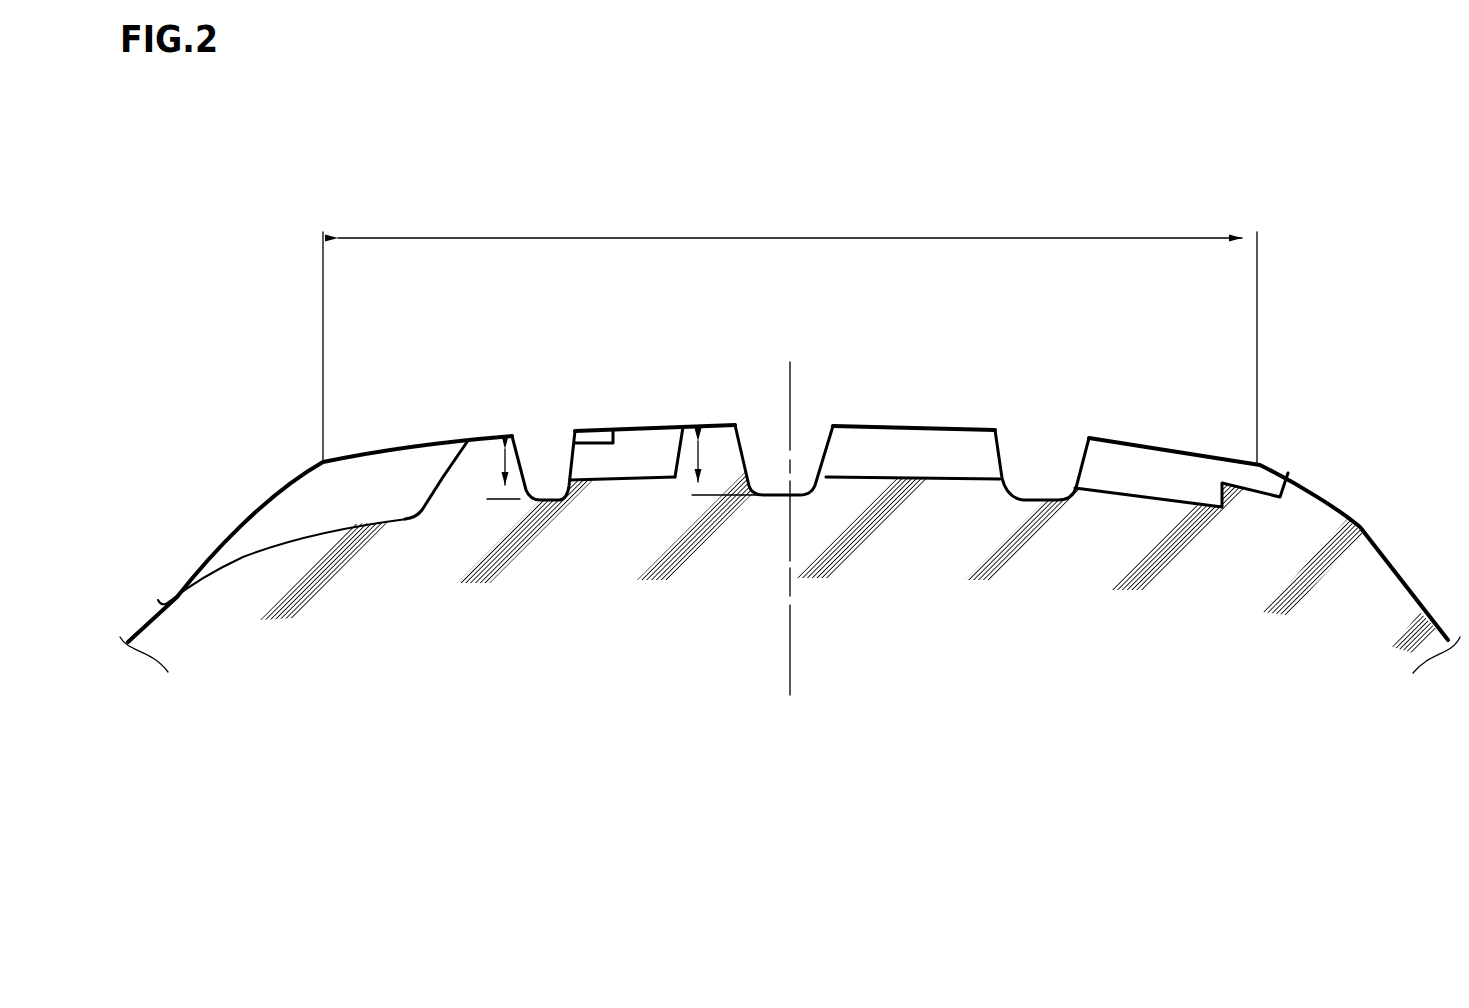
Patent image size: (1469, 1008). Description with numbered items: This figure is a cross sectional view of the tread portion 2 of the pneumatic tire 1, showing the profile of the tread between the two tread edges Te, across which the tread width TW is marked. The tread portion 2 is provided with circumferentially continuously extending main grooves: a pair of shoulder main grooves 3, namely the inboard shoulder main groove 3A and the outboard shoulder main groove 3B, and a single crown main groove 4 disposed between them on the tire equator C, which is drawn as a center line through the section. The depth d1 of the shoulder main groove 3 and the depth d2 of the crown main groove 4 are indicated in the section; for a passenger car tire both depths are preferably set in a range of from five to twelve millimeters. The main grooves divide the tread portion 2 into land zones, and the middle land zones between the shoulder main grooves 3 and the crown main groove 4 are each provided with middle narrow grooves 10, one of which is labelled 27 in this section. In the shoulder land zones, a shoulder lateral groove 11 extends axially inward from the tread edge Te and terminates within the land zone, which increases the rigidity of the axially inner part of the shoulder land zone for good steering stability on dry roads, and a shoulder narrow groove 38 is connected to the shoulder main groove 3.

The pneumatic tire 1 is at (790, 469).
The tread portion 2 is at (836, 416).
The shoulder main grooves 3 is at (795, 382).
The inboard shoulder main groove 3A is at (1037, 446).
The outboard shoulder main groove 3B is at (542, 446).
The crown main groove 4 is at (767, 447).
The middle narrow grooves 10 is at (772, 388).
The land portion with chamfer 27 is at (624, 461).
The shoulder lateral grooves 11 is at (370, 477).
The shoulder narrow grooves 38 is at (1160, 466).
The tire equator C is at (791, 513).
The tread edges Te is at (320, 464).
The tread width TW is at (790, 333).
The depth of the shoulder main groove d1 is at (503, 462).
The depth of the crown main groove d2 is at (696, 460).